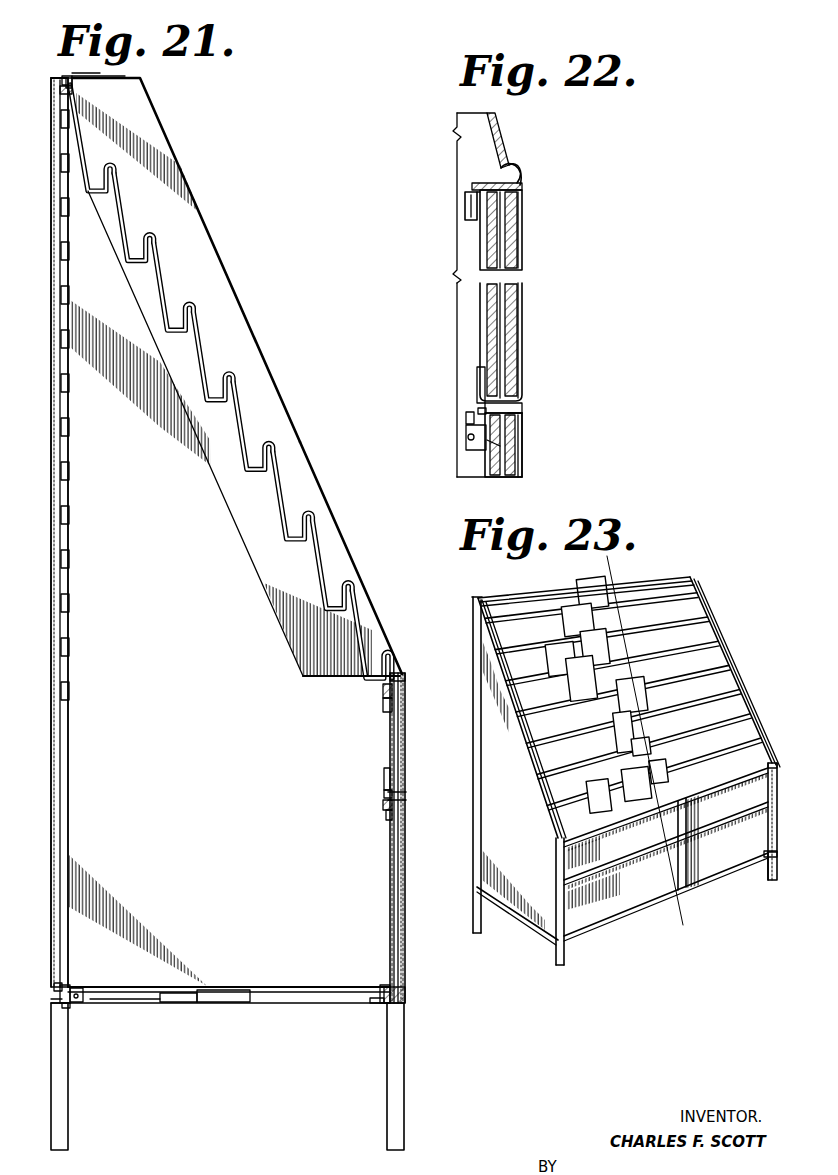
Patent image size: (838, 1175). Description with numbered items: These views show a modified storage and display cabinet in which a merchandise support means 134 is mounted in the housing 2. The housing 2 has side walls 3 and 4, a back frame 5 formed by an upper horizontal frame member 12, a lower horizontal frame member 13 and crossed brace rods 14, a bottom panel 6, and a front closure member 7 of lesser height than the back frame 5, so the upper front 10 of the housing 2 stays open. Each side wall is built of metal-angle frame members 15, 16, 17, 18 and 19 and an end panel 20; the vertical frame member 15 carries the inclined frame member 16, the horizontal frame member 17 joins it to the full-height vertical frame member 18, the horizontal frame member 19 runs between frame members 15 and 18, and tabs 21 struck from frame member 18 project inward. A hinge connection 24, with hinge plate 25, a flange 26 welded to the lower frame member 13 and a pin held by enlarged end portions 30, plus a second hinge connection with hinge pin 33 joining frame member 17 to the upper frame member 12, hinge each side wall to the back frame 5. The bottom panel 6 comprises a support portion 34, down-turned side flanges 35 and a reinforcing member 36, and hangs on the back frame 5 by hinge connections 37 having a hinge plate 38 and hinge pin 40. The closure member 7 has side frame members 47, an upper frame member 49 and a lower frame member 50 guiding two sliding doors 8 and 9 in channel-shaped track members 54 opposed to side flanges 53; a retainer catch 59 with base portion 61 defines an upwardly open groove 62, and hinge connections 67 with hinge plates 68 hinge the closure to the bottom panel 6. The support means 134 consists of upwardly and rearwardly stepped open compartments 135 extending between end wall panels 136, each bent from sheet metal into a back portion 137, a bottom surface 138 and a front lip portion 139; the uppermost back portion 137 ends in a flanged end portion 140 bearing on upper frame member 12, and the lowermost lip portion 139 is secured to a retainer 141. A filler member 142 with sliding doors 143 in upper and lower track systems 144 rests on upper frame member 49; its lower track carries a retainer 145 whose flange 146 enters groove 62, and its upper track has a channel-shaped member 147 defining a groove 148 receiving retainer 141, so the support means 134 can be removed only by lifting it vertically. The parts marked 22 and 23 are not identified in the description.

In FIG. 21, the housing 2 is at (368, 594).
In FIG. 23, the housing 2 is at (735, 667).
In FIG. 21, the side wall 3 is at (55, 620).
In FIG. 22, the side wall 3 is at (457, 358).
In FIG. 23, the side wall 3 is at (742, 698).
In FIG. 23, the side wall 4 is at (478, 835).
In FIG. 21, the back frame 5 is at (55, 285).
In FIG. 23, the back frame 5 is at (474, 632).
In FIG. 21, the bottom panel 6 is at (250, 987).
In FIG. 21, the front closure member 7 is at (405, 903).
In FIG. 22, the front closure member 7 is at (517, 447).
In FIG. 23, the front closure member 7 is at (712, 866).
In FIG. 21, the sliding door 8 is at (405, 880).
In FIG. 22, the sliding door 8 is at (520, 465).
In FIG. 23, the sliding door 8 is at (738, 858).
In FIG. 21, the sliding door 9 is at (392, 895).
In FIG. 22, the sliding door 9 is at (488, 467).
In FIG. 23, the sliding door 9 is at (622, 916).
In FIG. 22, the front 10 is at (521, 477).
In FIG. 23, the front 10 is at (776, 768).
In FIG. 21, the upper horizontal frame member 12 is at (60, 90).
In FIG. 23, the upper horizontal frame member 12 is at (535, 592).
In FIG. 21, the lower horizontal frame member 13 is at (53, 995).
In FIG. 21, the brace rods 14 is at (58, 480).
In FIG. 21, the frame member 15 is at (405, 847).
In FIG. 22, the frame member 15 is at (522, 295).
In FIG. 23, the frame member 15 is at (777, 784).
In FIG. 23, the frame member 16 is at (755, 715).
In FIG. 21, the frame member 17 is at (68, 76).
In FIG. 23, the frame member 17 is at (480, 596).
In FIG. 21, the frame member 18 is at (69, 665).
In FIG. 23, the frame member 18 is at (476, 785).
In FIG. 23, the frame member 19 is at (522, 915).
In FIG. 21, the end panel 20 is at (57, 785).
In FIG. 23, the end panel 20 is at (700, 614).
In FIG. 21, the tabs 21 is at (69, 425).
In FIG. 23, the tabs 21 is at (586, 560).
In FIG. 21, the rear leg 22 is at (68, 1112).
In FIG. 21, the front leg 23 is at (404, 1110).
In FIG. 23, the front leg 23 is at (778, 874).
In FIG. 21, the hinge connection 24 is at (100, 73).
In FIG. 23, the hinge connection 24 is at (692, 577).
In FIG. 21, the hinge plate 25 is at (105, 1004).
In FIG. 21, the flange 26 is at (70, 986).
In FIG. 21, the enlarged end portions 30 is at (97, 1005).
In FIG. 21, the hinge pin 33 is at (108, 77).
In FIG. 21, the support portion 34 is at (312, 986).
In FIG. 21, the side flanges 35 is at (163, 1003).
In FIG. 21, the reinforcing member 36 is at (236, 1004).
In FIG. 21, the hinge connection 37 is at (56, 986).
In FIG. 21, the hinge plate 38 is at (70, 1006).
In FIG. 21, the hinge pin 40 is at (84, 992).
In FIG. 22, the side frame member 47 is at (483, 478).
In FIG. 21, the upper frame member 49 is at (406, 800).
In FIG. 22, the upper frame member 49 is at (520, 412).
In FIG. 21, the lower frame member 50 is at (406, 1002).
In FIG. 23, the lower frame member 50 is at (776, 852).
In FIG. 22, the side flange 53 is at (487, 442).
In FIG. 21, the track member 54 is at (406, 810).
In FIG. 22, the track member 54 is at (523, 422).
In FIG. 23, the track member 54 is at (610, 866).
In FIG. 21, the retainer catch 59 is at (385, 806).
In FIG. 22, the retainer catch 59 is at (466, 420).
In FIG. 21, the base portion 61 is at (388, 813).
In FIG. 21, the groove 62 is at (388, 795).
In FIG. 22, the groove 62 is at (476, 412).
In FIG. 21, the hinge connection 67 is at (371, 1003).
In FIG. 21, the hinge plate 68 is at (382, 990).
In FIG. 23, the merchandise support means 134 is at (727, 647).
In FIG. 21, the open compartments 135 is at (185, 318).
In FIG. 21, the end wall panels 136 is at (255, 347).
In FIG. 22, the end wall panels 136 is at (457, 150).
In FIG. 23, the end wall panels 136 is at (768, 748).
In FIG. 21, the back portion 137 is at (290, 508).
In FIG. 23, the back portion 137 is at (538, 735).
In FIG. 21, the bottom surface 138 is at (229, 405).
In FIG. 21, the front lip portion 139 is at (158, 247).
In FIG. 23, the front lip portion 139 is at (596, 740).
In FIG. 21, the flanged end portion 140 is at (63, 78).
In FIG. 21, the retainer 141 is at (395, 674).
In FIG. 22, the retainer 141 is at (497, 183).
In FIG. 23, the retainer 141 is at (625, 818).
In FIG. 21, the filler member 142 is at (406, 727).
In FIG. 22, the filler member 142 is at (522, 255).
In FIG. 23, the filler member 142 is at (710, 818).
In FIG. 21, the sliding doors 143 is at (393, 743).
In FIG. 22, the sliding doors 143 is at (512, 353).
In FIG. 23, the sliding doors 143 is at (652, 852).
In FIG. 21, the track system 144 is at (406, 792).
In FIG. 22, the track system 144 is at (520, 398).
In FIG. 23, the track system 144 is at (752, 810).
In FIG. 21, the retainer 145 is at (386, 780).
In FIG. 22, the retainer 145 is at (477, 377).
In FIG. 22, the flange 146 is at (470, 437).
In FIG. 21, the channel-shaped member 147 is at (383, 692).
In FIG. 22, the channel-shaped member 147 is at (465, 208).
In FIG. 21, the groove 148 is at (385, 705).
In FIG. 22, the groove 148 is at (472, 220).